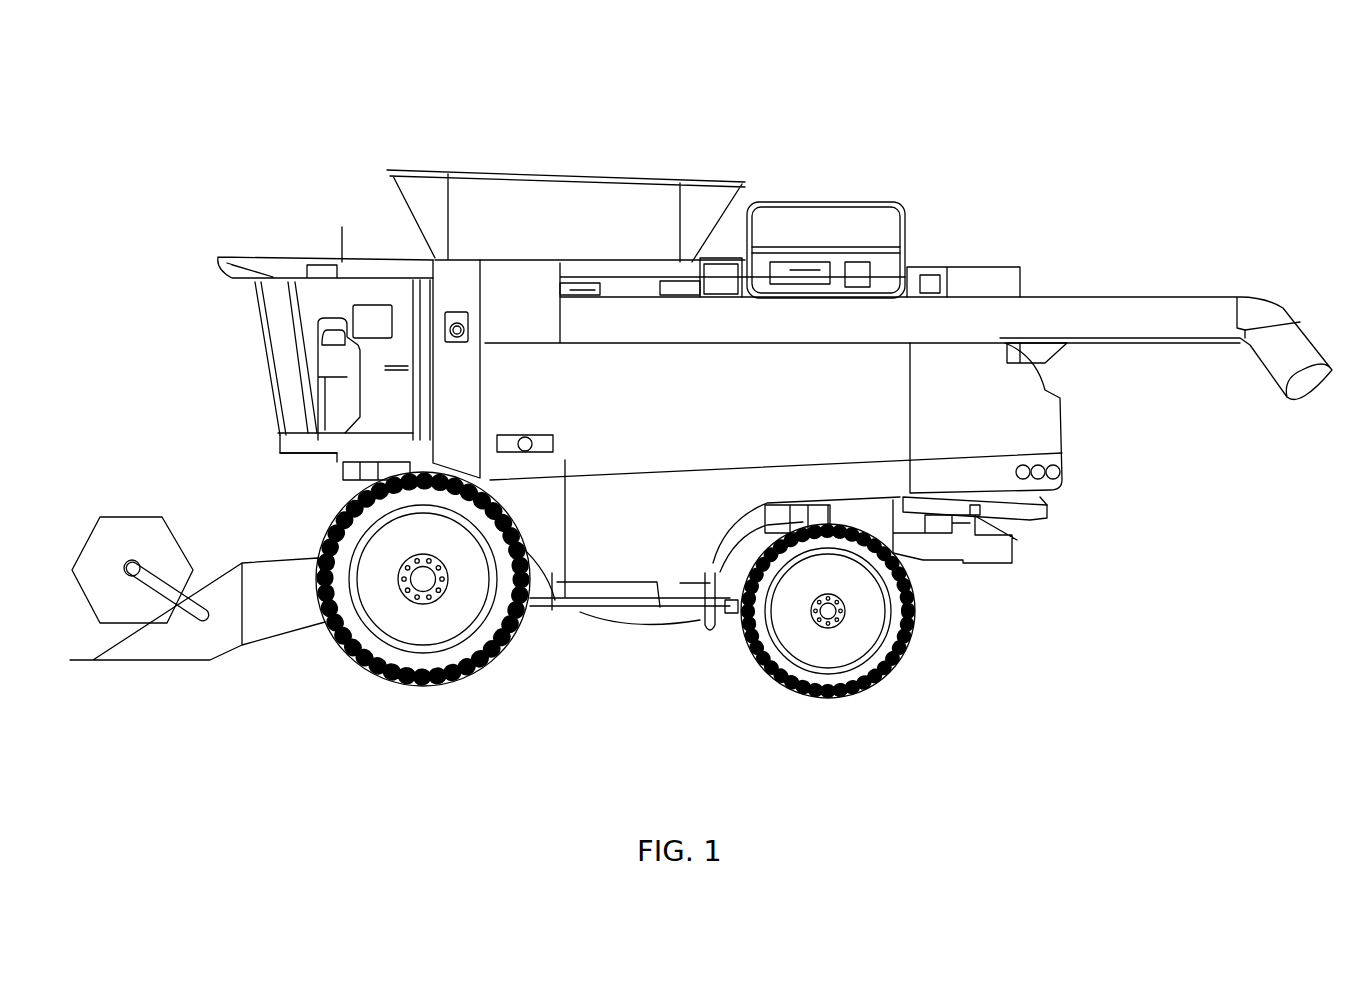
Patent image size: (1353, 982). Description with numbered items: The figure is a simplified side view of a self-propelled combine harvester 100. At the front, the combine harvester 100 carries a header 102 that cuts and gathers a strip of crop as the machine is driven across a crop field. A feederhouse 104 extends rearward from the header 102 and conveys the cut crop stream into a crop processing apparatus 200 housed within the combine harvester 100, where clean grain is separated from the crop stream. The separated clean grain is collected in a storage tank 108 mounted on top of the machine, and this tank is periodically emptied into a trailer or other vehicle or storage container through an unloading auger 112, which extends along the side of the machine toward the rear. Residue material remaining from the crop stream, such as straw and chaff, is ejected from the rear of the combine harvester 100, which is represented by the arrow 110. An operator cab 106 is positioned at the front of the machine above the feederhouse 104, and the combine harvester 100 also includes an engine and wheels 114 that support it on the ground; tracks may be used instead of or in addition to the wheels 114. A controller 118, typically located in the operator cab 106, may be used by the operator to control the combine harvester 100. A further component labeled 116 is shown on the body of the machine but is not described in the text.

The combine harvester 100 is at (262, 168).
The header 102 is at (162, 665).
The feederhouse 104 is at (283, 623).
The operator cab 106 is at (286, 403).
The storage tank 108 is at (640, 167).
The arrow 110 is at (1088, 570).
The unloading auger 112 is at (815, 302).
The wheels 114 is at (475, 680).
The sensor 116 is at (549, 455).
The controller 118 is at (381, 316).
The crop processing apparatus 200 is at (697, 540).